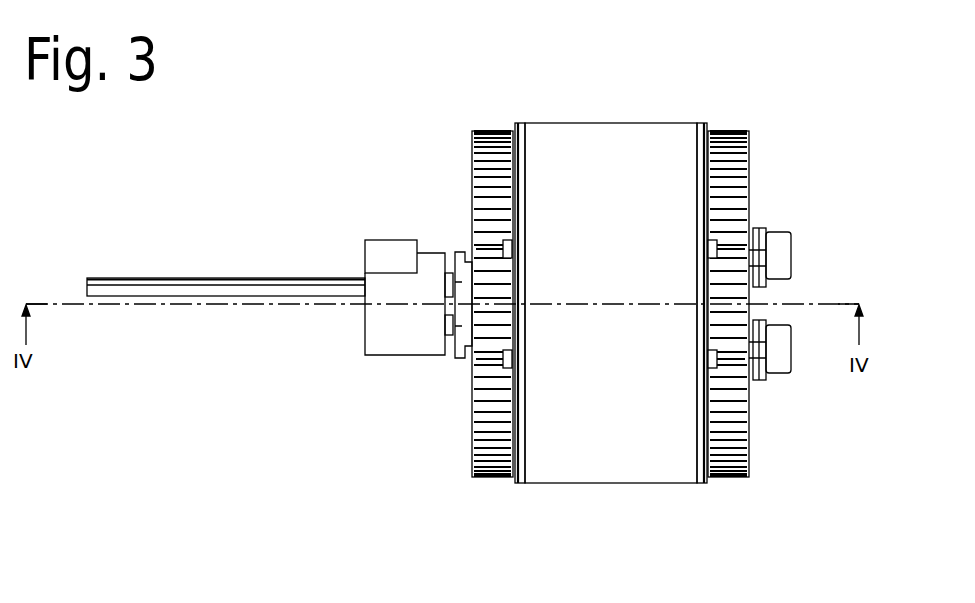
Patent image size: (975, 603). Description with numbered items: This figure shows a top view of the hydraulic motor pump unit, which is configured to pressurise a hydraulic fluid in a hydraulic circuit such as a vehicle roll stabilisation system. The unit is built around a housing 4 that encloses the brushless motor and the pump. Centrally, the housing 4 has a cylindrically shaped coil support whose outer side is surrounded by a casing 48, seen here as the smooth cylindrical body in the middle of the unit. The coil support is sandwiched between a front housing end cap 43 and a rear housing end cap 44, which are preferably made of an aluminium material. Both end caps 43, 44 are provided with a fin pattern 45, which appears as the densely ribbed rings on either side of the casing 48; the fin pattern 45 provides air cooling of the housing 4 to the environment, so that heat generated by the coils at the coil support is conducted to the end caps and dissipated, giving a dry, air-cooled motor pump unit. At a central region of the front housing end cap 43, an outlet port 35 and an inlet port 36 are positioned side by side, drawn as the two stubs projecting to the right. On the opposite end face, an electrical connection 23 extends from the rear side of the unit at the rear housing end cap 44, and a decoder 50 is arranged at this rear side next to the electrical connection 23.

The housing 4 is at (810, 70).
The electrical connection 23 is at (165, 287).
The outlet port 35 is at (777, 252).
The inlet port 36 is at (777, 358).
The front housing end cap 43 is at (738, 177).
The rear housing end cap 44 is at (490, 179).
The fin pattern 45 is at (490, 432).
The casing 48 is at (620, 166).
The decoder 50 is at (388, 332).